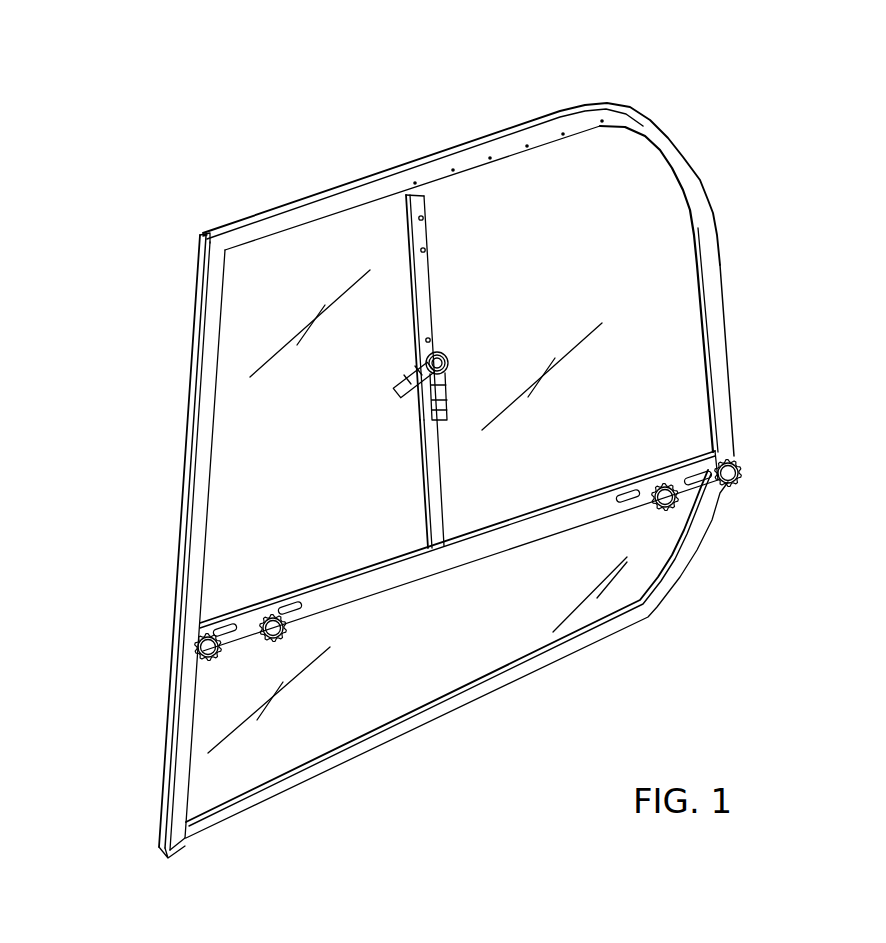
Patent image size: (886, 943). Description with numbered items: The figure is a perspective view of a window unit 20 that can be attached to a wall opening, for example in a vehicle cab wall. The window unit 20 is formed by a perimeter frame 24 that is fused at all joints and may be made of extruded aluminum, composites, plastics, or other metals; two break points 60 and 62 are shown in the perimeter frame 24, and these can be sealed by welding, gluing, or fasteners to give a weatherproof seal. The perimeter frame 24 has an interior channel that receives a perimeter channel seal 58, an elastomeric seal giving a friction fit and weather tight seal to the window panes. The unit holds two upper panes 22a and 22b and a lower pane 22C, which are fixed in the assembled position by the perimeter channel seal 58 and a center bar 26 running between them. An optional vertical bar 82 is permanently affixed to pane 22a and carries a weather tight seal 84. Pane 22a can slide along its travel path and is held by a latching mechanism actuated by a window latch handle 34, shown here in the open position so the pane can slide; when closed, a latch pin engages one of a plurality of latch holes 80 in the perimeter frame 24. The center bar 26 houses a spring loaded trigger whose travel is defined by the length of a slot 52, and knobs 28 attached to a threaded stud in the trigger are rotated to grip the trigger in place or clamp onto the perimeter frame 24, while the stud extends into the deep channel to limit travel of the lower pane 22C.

The window unit 20 is at (772, 227).
The upper pane 22a is at (302, 253).
The upper pane 22b is at (571, 178).
The lower pane 22C is at (331, 727).
The perimeter frame 24 is at (727, 400).
The center bar 26 is at (575, 513).
The knob 28 is at (203, 647).
The window latch handle 34 is at (410, 385).
The slot 52 is at (636, 493).
The perimeter channel seal 58 is at (535, 653).
The break point 60 is at (197, 255).
The break point 62 is at (160, 841).
The latch hole 80 is at (488, 162).
The vertical bar 82 is at (431, 318).
The weather tight seal 84 is at (421, 457).